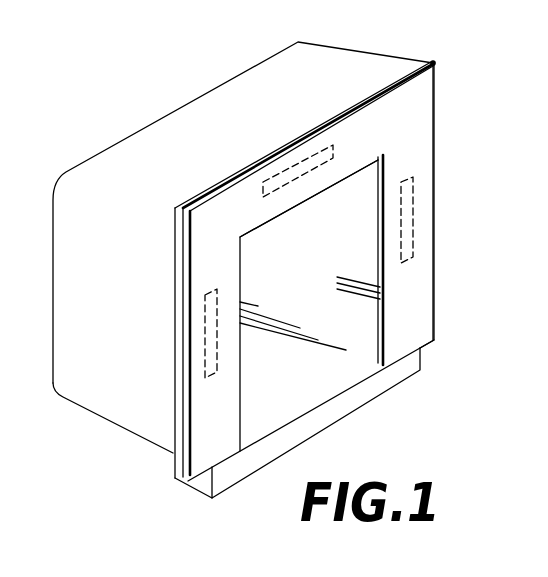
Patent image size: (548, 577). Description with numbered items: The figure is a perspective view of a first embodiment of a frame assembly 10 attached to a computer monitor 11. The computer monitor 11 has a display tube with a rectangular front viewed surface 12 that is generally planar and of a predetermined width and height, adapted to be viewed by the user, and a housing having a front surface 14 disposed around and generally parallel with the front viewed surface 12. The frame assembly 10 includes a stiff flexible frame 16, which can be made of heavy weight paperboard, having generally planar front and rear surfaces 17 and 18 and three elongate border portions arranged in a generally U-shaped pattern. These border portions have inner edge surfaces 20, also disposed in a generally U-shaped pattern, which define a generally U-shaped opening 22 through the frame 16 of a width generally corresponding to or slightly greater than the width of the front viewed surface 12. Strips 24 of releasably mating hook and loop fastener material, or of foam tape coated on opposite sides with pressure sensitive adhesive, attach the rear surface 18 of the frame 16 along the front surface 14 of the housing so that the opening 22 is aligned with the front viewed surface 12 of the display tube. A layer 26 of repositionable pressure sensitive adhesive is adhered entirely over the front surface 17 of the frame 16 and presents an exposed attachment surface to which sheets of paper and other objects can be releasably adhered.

The frame assembly 10 is at (459, 66).
The computer monitor 11 is at (330, 58).
The front viewed surface 12 is at (317, 292).
The front surface of the housing 14 is at (370, 391).
The frame 16 is at (433, 61).
The front surface of the frame 17 is at (436, 265).
The rear surface of the frame 18 is at (183, 430).
The inner edge surfaces 20 is at (358, 176).
The opening 22 is at (248, 238).
The strips 24 is at (290, 150).
The layer of repositionable pressure sensitive adhesive 26 is at (203, 447).